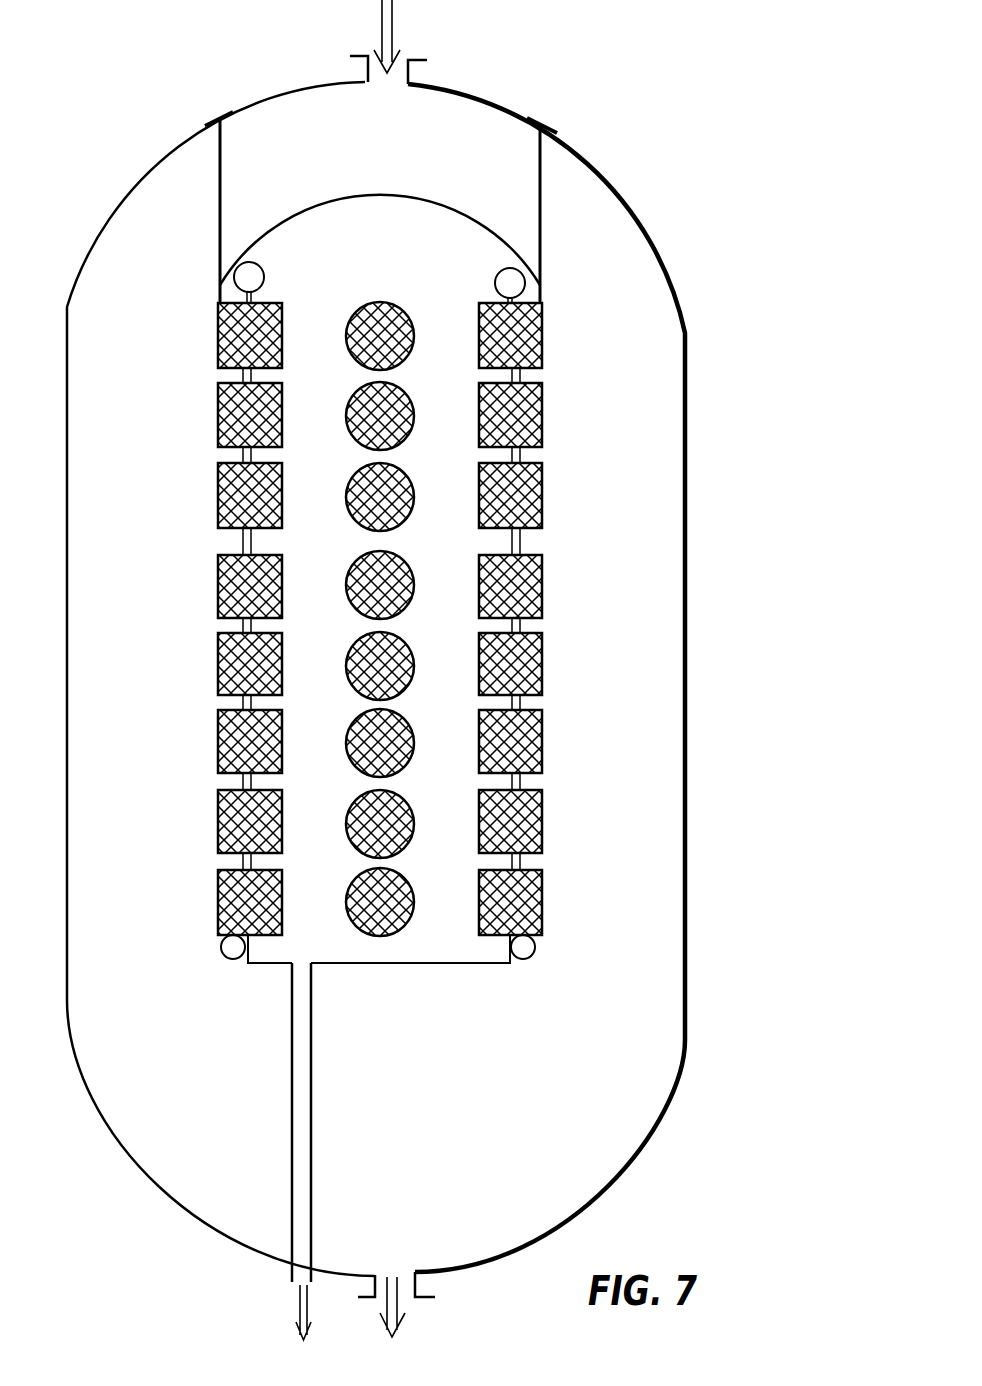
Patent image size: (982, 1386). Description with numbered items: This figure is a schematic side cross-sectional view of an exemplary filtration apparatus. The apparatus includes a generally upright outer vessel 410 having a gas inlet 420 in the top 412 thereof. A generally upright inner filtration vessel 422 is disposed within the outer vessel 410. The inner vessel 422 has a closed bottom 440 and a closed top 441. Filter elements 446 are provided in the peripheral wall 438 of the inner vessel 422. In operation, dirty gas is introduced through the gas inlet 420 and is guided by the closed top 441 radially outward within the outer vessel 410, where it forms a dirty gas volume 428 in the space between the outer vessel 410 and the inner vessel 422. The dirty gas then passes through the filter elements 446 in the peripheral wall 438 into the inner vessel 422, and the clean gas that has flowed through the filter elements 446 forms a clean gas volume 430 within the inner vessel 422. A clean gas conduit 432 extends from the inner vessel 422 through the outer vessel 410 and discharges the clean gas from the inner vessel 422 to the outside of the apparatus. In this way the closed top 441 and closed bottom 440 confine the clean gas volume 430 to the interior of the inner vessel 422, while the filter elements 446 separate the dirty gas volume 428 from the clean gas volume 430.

The outer vessel 410 is at (700, 196).
The top of the outer vessel 412 is at (659, 259).
The gas inlet 420 is at (413, 62).
The inner filtration vessel 422 is at (243, 991).
The dirty gas volume 428 is at (170, 733).
The clean gas volume 430 is at (337, 742).
The clean gas conduit 432 is at (293, 1158).
The peripheral wall of the inner vessel 438 is at (520, 462).
The closed bottom of the inner vessel 440 is at (443, 978).
The closed top of the inner vessel 441 is at (373, 196).
The filter elements 446 is at (526, 743).